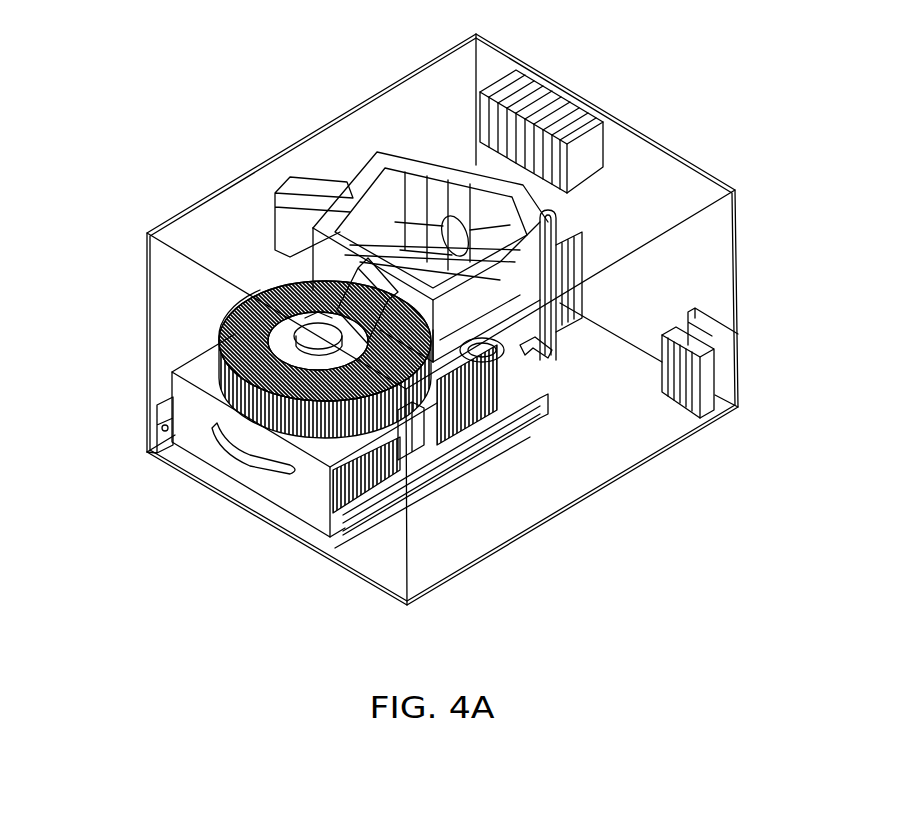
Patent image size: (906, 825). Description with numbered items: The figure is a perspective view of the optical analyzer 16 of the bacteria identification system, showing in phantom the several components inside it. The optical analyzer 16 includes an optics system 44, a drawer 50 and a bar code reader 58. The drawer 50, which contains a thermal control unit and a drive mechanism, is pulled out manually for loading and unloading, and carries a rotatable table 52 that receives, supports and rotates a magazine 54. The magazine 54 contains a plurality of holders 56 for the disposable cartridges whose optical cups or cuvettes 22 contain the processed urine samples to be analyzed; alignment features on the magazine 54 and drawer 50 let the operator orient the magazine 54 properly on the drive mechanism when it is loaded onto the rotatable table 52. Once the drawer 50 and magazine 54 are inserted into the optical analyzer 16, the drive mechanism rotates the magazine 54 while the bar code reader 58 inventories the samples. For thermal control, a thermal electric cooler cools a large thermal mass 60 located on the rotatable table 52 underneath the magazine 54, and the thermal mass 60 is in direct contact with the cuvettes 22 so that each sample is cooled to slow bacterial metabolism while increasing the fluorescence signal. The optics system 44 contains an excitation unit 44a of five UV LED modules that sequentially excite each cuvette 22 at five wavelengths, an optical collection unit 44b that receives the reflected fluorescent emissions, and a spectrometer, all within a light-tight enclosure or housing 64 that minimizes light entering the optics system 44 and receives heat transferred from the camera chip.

The optical analyzer 16 is at (683, 96).
The light-tight enclosure or housing 64 is at (572, 92).
The optics system 44 is at (368, 165).
The excitation unit 44a is at (224, 312).
The optical collection unit 44b is at (432, 341).
The magazine 54 is at (238, 288).
The optical cup or cuvette 22 is at (232, 322).
The thermal mass 60 is at (150, 420).
The holders 56 is at (172, 444).
The drawer 50 is at (283, 486).
The rotatable table 52 is at (262, 463).
The bar code reader 58 is at (363, 560).